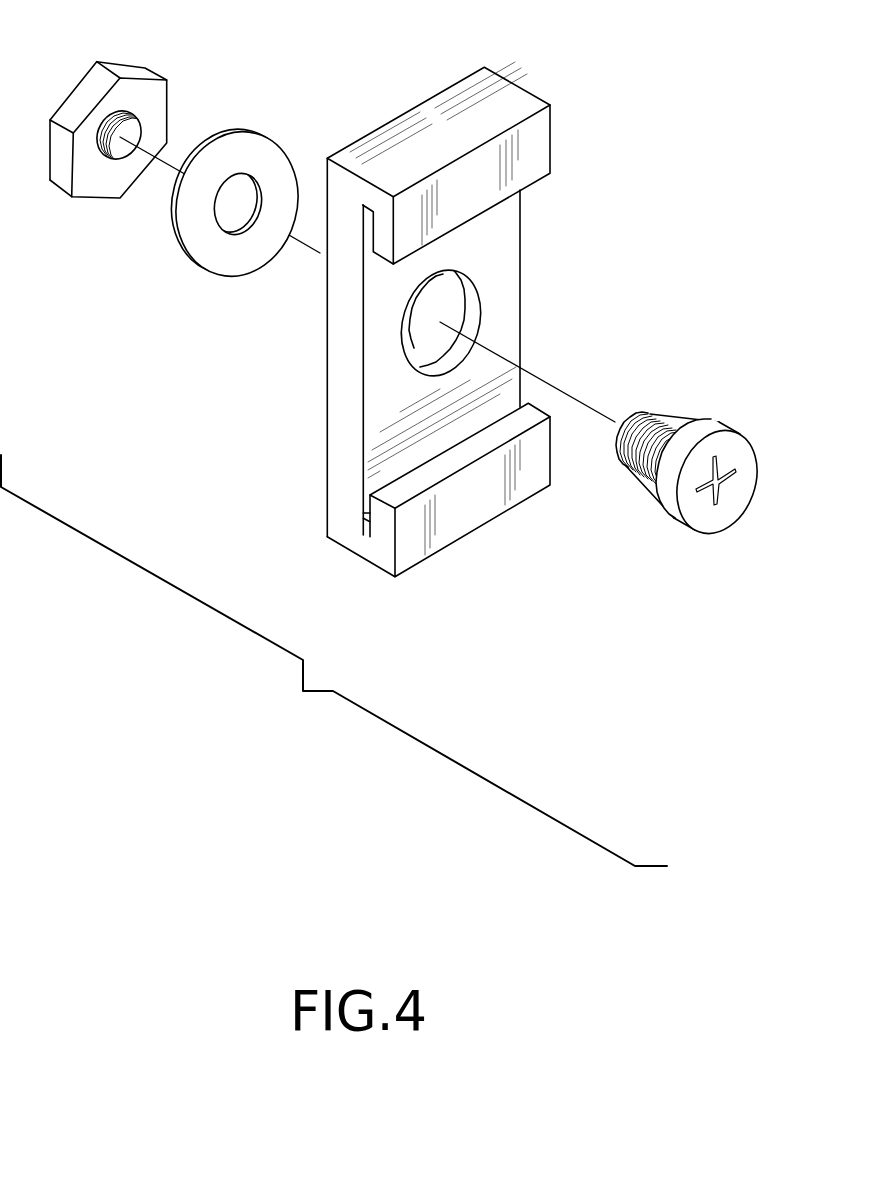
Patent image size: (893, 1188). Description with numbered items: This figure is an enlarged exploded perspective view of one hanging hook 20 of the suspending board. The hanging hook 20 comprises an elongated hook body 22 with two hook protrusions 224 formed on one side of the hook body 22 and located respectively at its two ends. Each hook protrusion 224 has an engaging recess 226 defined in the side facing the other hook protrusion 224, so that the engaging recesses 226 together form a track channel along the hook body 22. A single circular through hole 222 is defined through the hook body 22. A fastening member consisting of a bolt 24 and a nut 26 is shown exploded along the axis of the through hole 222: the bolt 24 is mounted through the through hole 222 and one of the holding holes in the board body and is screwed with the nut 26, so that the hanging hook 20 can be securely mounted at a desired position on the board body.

The hanging hook 20 is at (625, 102).
The hook body 22 is at (310, 375).
The through hole 222 is at (465, 288).
The hook protrusion 224 is at (527, 152).
The engaging recess 226 is at (367, 517).
The bolt 24 is at (712, 428).
The nut 26 is at (137, 88).